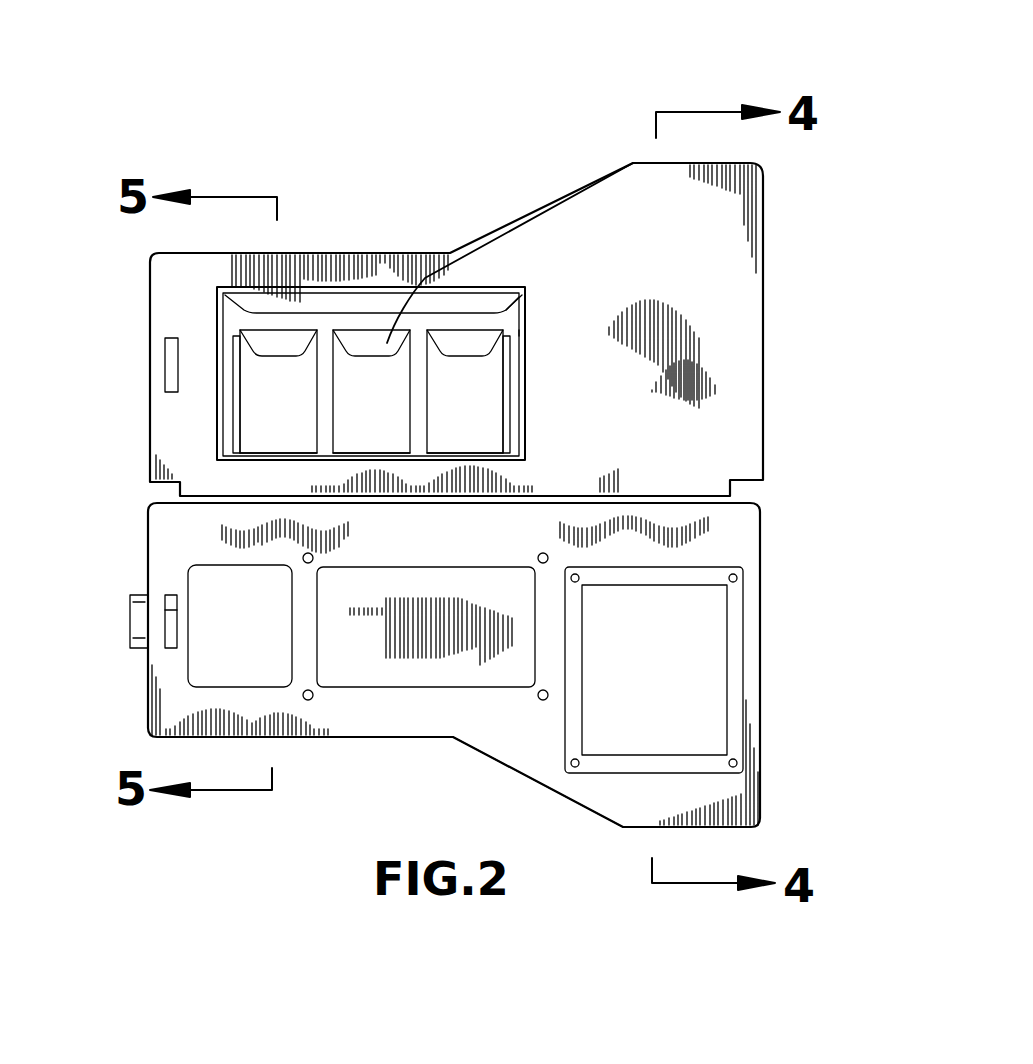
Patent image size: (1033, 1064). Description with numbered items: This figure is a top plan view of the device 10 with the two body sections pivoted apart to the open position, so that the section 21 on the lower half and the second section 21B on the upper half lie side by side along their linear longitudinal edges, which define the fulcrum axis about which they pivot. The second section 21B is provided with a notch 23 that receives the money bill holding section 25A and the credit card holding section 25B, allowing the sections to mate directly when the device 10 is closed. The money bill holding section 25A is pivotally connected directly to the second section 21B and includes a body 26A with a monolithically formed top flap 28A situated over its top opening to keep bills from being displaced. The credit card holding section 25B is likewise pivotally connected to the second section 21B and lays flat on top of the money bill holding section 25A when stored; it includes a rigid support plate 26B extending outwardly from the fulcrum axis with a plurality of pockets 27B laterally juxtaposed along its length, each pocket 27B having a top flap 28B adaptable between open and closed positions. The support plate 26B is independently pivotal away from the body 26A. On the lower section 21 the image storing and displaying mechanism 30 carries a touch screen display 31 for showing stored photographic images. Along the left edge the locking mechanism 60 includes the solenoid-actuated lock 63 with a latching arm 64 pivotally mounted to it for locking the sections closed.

The device 10 is at (188, 90).
The body section 21 is at (511, 725).
The second section 21B is at (608, 213).
The notch 23 is at (217, 310).
The money bill holding section 25A is at (512, 320).
The credit card holding section 25B is at (510, 387).
The body 26A is at (523, 333).
The rigid support plate 26B is at (327, 440).
The pocket 27B is at (367, 397).
The top flap 28A is at (363, 313).
The top flap 28B is at (278, 338).
The image storing and displaying mechanism 30 is at (743, 630).
The touch screen display 31 is at (703, 678).
The locking mechanism 60 is at (143, 652).
The solenoid-actuated lock 63 is at (128, 642).
The latching arm 64 is at (172, 603).